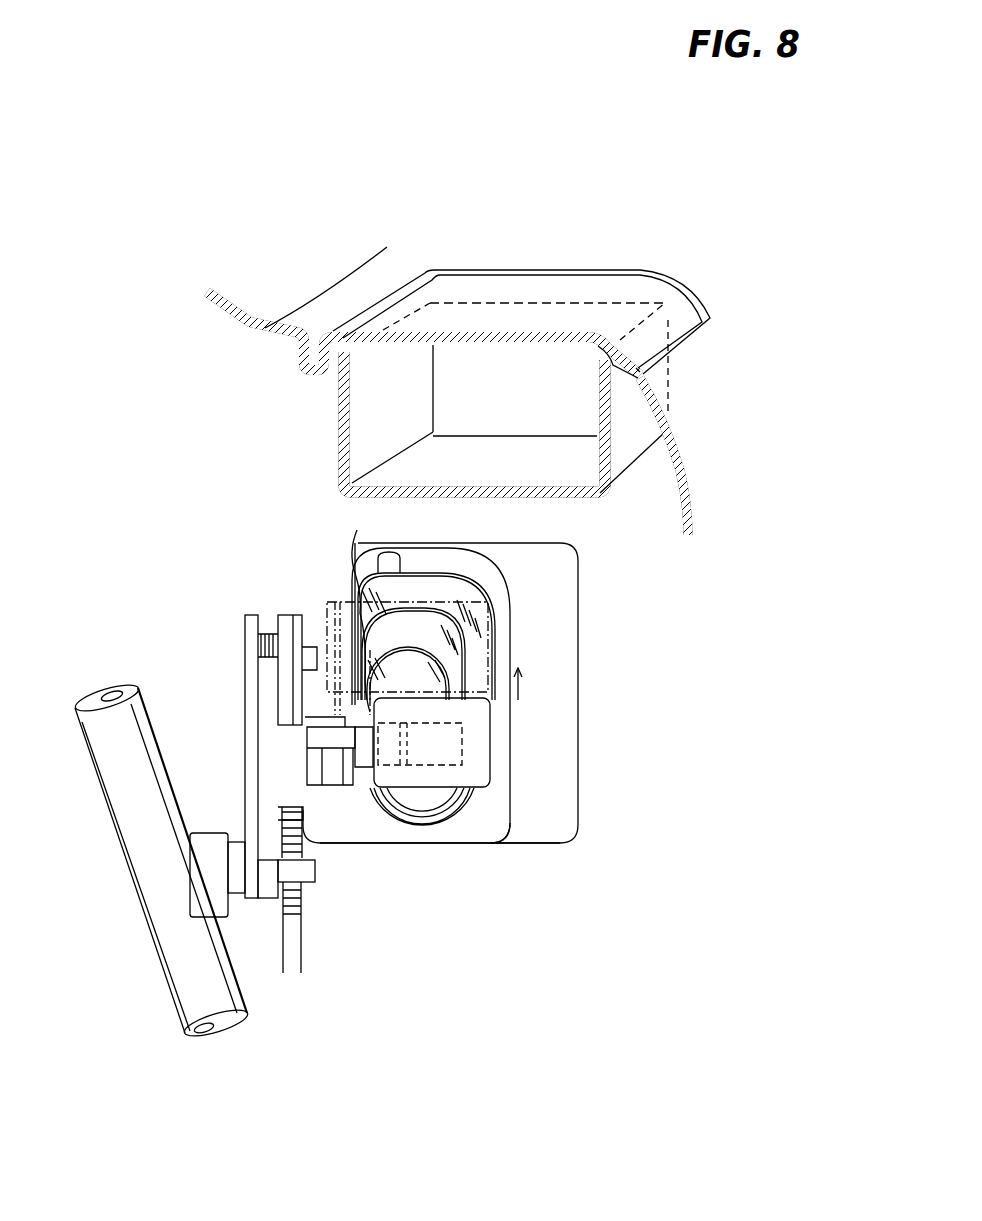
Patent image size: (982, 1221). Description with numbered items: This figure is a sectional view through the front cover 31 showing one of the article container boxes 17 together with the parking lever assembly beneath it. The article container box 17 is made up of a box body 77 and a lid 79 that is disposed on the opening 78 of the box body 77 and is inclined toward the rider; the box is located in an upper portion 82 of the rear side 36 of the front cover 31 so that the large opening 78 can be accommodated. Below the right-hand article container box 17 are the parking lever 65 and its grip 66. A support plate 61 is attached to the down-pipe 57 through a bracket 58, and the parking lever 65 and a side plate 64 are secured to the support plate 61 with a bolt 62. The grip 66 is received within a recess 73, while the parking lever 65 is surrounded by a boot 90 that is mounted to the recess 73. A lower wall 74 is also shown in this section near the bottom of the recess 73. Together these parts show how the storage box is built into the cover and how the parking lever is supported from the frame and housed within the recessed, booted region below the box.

The article container box 17 is at (661, 237).
The front cover 31 is at (292, 287).
The rear side 36 is at (423, 259).
The down-pipe 57 is at (112, 690).
The bracket 58 is at (210, 834).
The support plate 61 is at (245, 670).
The bolt 62 is at (333, 657).
The side plate 64 is at (300, 617).
The parking lever 65 is at (407, 740).
The grip 66 is at (490, 781).
The recess 73 is at (553, 648).
The lower wall 74 is at (515, 875).
The box body 77 is at (637, 435).
The opening 78 is at (585, 340).
The lid 79 is at (710, 323).
The upper portion 82 is at (533, 232).
The boot 90 is at (521, 809).